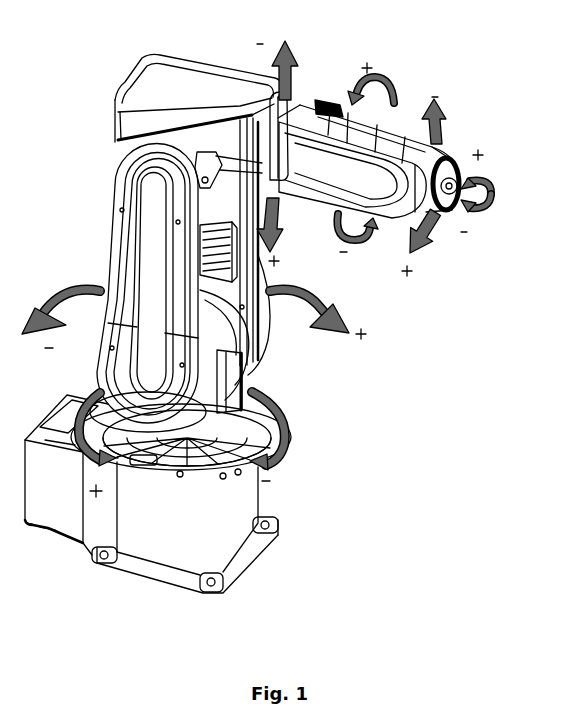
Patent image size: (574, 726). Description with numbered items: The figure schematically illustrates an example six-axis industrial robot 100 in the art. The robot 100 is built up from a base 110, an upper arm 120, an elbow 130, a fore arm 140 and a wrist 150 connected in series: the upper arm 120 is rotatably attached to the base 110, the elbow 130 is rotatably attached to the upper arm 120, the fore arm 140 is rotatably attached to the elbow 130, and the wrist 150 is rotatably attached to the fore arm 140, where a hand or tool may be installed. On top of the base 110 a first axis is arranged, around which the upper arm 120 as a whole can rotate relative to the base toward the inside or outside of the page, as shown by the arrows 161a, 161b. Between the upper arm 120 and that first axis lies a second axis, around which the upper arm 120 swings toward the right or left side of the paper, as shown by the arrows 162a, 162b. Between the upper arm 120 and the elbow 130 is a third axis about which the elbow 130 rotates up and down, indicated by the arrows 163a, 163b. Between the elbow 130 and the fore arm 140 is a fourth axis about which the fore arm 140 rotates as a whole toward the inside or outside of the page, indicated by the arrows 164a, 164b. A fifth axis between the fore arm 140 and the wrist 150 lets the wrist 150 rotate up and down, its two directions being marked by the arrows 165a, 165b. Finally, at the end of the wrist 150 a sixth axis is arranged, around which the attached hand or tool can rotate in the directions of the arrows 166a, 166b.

The industrial robot 100 is at (62, 56).
The base 110 is at (245, 499).
The upper arm 120 is at (137, 254).
The elbow 130 is at (113, 108).
The fore arm 140 is at (313, 102).
The wrist 150 is at (448, 152).
The arrow 161a is at (83, 422).
The arrow 161b is at (283, 434).
The arrow 162a is at (55, 312).
The arrow 162b is at (317, 311).
The arrow 163a is at (265, 70).
The arrow 163b is at (286, 225).
The arrow 164a is at (386, 90).
The arrow 164b is at (366, 233).
The axis 5 negative rotation direction arrow 165a is at (452, 121).
The axis 5 positive rotation direction arrow 165b is at (431, 235).
The arrow 166a is at (490, 176).
The arrow 166b is at (482, 214).